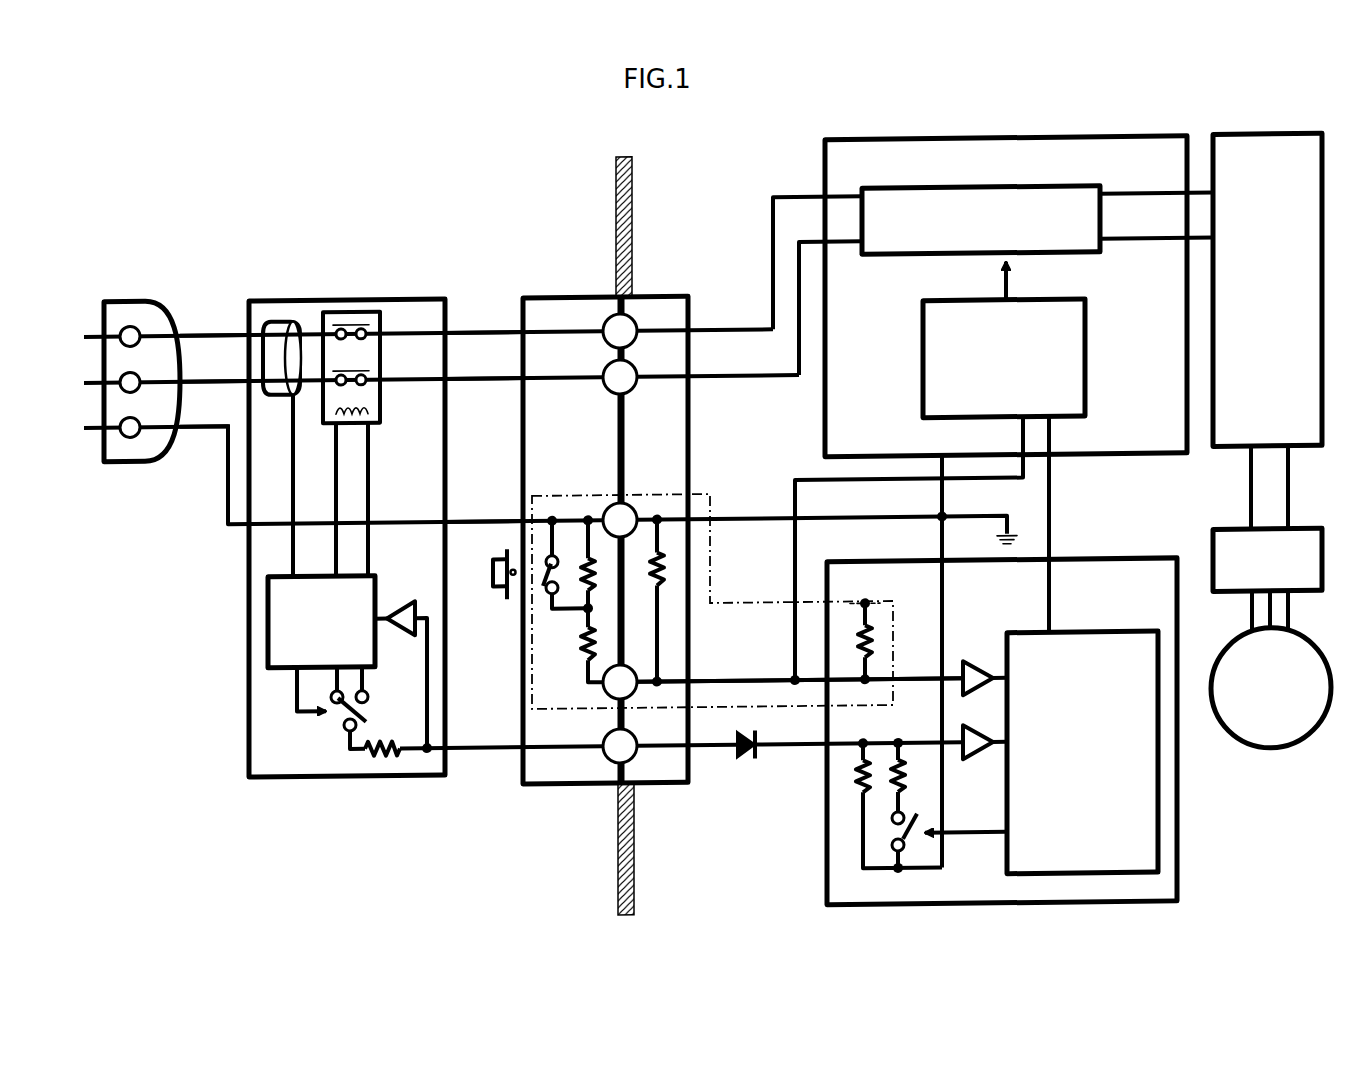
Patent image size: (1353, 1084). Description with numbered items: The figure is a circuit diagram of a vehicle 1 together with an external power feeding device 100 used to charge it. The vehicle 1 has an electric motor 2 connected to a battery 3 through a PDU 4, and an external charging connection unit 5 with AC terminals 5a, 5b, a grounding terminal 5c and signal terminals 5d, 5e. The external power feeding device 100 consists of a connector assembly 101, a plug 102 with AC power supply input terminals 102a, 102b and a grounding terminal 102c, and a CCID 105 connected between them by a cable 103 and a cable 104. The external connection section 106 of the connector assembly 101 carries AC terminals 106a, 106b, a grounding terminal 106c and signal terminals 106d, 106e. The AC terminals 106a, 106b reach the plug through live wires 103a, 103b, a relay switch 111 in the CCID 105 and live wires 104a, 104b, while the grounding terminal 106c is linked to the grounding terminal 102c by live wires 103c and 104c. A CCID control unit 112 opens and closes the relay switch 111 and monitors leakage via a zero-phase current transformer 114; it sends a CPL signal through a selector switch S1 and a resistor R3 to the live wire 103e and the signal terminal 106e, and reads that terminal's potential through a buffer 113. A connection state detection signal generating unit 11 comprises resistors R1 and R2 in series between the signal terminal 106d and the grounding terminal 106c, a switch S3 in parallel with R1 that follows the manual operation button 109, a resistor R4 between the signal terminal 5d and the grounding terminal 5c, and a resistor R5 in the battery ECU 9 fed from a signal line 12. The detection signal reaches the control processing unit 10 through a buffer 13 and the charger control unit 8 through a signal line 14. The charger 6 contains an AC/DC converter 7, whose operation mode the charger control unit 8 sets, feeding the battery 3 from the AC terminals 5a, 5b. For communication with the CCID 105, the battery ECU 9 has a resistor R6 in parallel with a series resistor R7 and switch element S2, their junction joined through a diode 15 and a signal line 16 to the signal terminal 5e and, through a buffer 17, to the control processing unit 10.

The vehicle 1 is at (612, 181).
The electric motor 2 is at (1268, 755).
The battery 3 is at (1238, 141).
The power drive unit 4 is at (1216, 536).
The external charging connection unit 5 is at (797, 528).
The AC terminal 5a is at (636, 322).
The AC terminal 5b is at (636, 368).
The grounding terminal 5c is at (636, 510).
The signal terminal 5d is at (636, 672).
The signal terminal 5e is at (632, 762).
The charger 6 is at (1032, 141).
The AC/DC converter 7 is at (1058, 191).
The charger control unit 8 is at (921, 343).
The battery ECU 9 is at (1075, 564).
The control processing unit 10 is at (1160, 822).
The connection state detection signal generating unit 11 is at (713, 497).
The signal line 12 is at (740, 680).
The buffer 13 is at (978, 666).
The signal line 14 is at (798, 500).
The diode 15 is at (748, 762).
The signal line 16 is at (793, 752).
The buffer 17 is at (980, 730).
The external power feeding device 100 is at (363, 196).
The connector assembly 101 is at (550, 274).
The plug 102 is at (118, 295).
The AC power supply input terminal 102a is at (92, 325).
The AC power supply input terminal 102b is at (92, 371).
The grounding terminal 102c is at (92, 416).
The cable 103 is at (524, 530).
The live wire 103a is at (481, 333).
The live wire 103b is at (481, 379).
The live wire 103c is at (486, 517).
The live wire 103e is at (483, 752).
The cable 104 is at (204, 396).
The live wire 104a is at (199, 334).
The live wire 104b is at (199, 380).
The live wire 104c is at (225, 478).
The CCID 105 is at (408, 297).
The external connection section 106 is at (576, 537).
The AC terminal 106a is at (606, 337).
The AC terminal 106b is at (607, 388).
The grounding terminal 106c is at (606, 508).
The signal terminal 106d is at (605, 696).
The signal terminal 106e is at (608, 761).
The manual operation button 109 is at (495, 590).
The relay switch 111 is at (337, 309).
The CCID control unit 112 is at (268, 640).
The buffer 113 is at (398, 605).
The zero-phase current transformer 114 is at (282, 318).
The resistor R1 is at (588, 545).
The resistor R2 is at (585, 645).
The resistor R3 is at (390, 758).
The resistor R4 is at (663, 572).
The resistor R5 is at (875, 645).
The resistor R6 is at (850, 785).
The resistor R7 is at (905, 786).
The selector switch S1 is at (368, 715).
The switch element S2 is at (915, 840).
The switch S3 is at (546, 556).